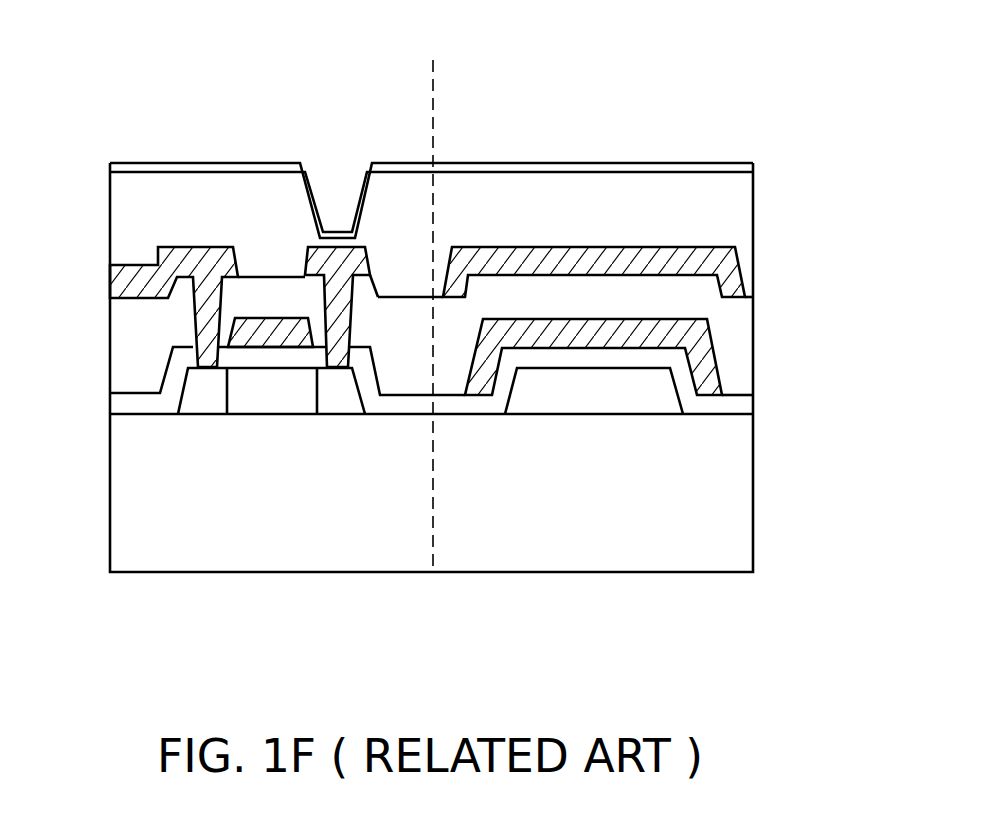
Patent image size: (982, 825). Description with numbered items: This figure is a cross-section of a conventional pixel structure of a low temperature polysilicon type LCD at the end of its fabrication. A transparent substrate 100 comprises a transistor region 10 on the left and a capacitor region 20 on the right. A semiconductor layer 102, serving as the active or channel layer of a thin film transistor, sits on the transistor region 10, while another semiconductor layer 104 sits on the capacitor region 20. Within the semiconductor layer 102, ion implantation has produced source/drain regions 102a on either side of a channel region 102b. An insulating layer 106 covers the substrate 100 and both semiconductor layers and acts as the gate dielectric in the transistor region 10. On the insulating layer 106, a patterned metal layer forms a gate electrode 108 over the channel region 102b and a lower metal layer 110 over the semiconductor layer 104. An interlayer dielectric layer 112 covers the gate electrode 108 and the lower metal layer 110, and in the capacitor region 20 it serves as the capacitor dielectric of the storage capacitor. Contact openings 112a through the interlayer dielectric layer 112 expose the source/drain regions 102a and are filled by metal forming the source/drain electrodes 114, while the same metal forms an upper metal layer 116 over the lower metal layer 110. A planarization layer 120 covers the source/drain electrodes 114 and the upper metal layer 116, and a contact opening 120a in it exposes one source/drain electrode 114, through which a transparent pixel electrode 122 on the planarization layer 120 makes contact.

The transistor region 10 is at (226, 38).
The capacitor region 20 is at (576, 38).
The transparent substrate 100 is at (753, 487).
The semiconductor layer 102 is at (147, 612).
The source/drain regions 102a is at (203, 400).
The channel region 102b is at (273, 400).
The semiconductor layer 104 is at (640, 405).
The insulating layer 106 is at (753, 404).
The gate electrode 108 is at (273, 322).
The lower metal layer 110 is at (707, 355).
The interlayer dielectric (ILD) layer 112 is at (753, 316).
The contact openings 112a is at (195, 313).
The source/drain electrodes 114 is at (183, 252).
The upper metal layer 116 is at (732, 257).
The planarization layer 120 is at (753, 208).
The contact opening 120a is at (343, 173).
The pixel electrode 122 is at (753, 164).